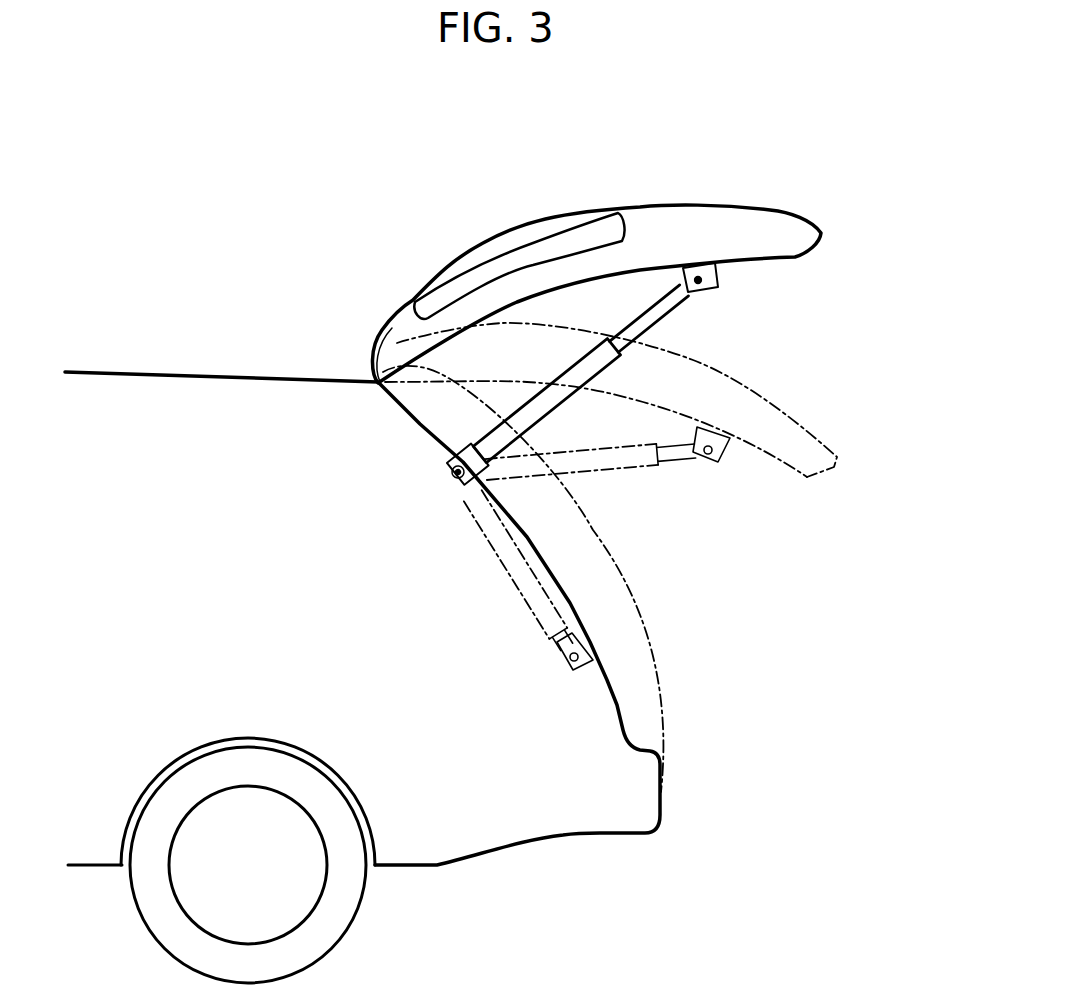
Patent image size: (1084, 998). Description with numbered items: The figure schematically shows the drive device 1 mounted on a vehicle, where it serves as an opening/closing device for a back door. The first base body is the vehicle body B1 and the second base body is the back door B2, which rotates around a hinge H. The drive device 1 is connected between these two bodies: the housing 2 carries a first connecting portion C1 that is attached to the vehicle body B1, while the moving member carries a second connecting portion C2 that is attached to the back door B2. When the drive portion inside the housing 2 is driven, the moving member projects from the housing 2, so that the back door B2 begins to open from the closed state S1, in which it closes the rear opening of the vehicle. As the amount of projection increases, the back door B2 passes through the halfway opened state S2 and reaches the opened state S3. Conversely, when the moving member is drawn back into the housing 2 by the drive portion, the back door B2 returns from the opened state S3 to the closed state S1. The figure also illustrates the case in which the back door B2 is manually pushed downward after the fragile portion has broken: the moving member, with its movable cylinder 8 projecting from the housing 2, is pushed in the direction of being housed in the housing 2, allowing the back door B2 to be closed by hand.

The drive device 1 is at (661, 429).
The housing 2 is at (556, 390).
The movable cylinder 8 is at (667, 307).
The first base body (vehicle body) B1 is at (440, 458).
The second base body (back door) B2 is at (766, 234).
The first connecting portion C1 is at (523, 533).
The second connecting portion C2 is at (716, 279).
The hinge H is at (380, 382).
The closed state S1 is at (662, 693).
The halfway opened state S2 is at (802, 418).
The opened state S3 is at (596, 235).